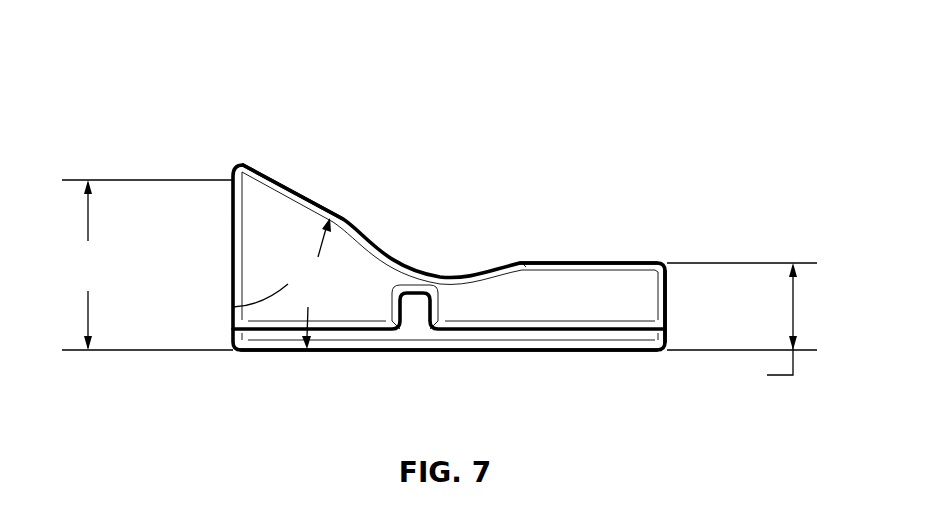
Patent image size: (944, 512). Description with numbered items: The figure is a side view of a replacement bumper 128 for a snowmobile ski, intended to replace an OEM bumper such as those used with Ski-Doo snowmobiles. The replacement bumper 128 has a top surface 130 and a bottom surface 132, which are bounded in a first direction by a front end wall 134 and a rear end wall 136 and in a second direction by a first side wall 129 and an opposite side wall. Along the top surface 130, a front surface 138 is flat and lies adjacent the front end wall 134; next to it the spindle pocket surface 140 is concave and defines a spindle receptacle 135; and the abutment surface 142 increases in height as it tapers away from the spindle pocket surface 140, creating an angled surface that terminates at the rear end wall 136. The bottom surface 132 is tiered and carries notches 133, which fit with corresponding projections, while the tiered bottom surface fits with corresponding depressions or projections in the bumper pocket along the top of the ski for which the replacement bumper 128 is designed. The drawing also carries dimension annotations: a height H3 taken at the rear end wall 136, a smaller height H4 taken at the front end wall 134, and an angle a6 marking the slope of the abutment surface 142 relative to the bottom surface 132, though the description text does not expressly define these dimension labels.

The replacement bumper 128 is at (229, 73).
The first side wall 129 is at (233, 305).
The top surface 130 is at (556, 261).
The bottom surface 132 is at (500, 352).
The notches 133 is at (413, 297).
The front end wall 134 is at (667, 298).
The spindle receptacle 135 is at (456, 266).
The rear end wall 136 is at (233, 244).
The front surface 138 is at (626, 261).
The spindle pocket surface 140 is at (410, 268).
The abutment surface 142 is at (302, 204).
The front height H3 is at (147, 265).
The rear height H4 is at (742, 328).
The incline angle a6 is at (282, 283).